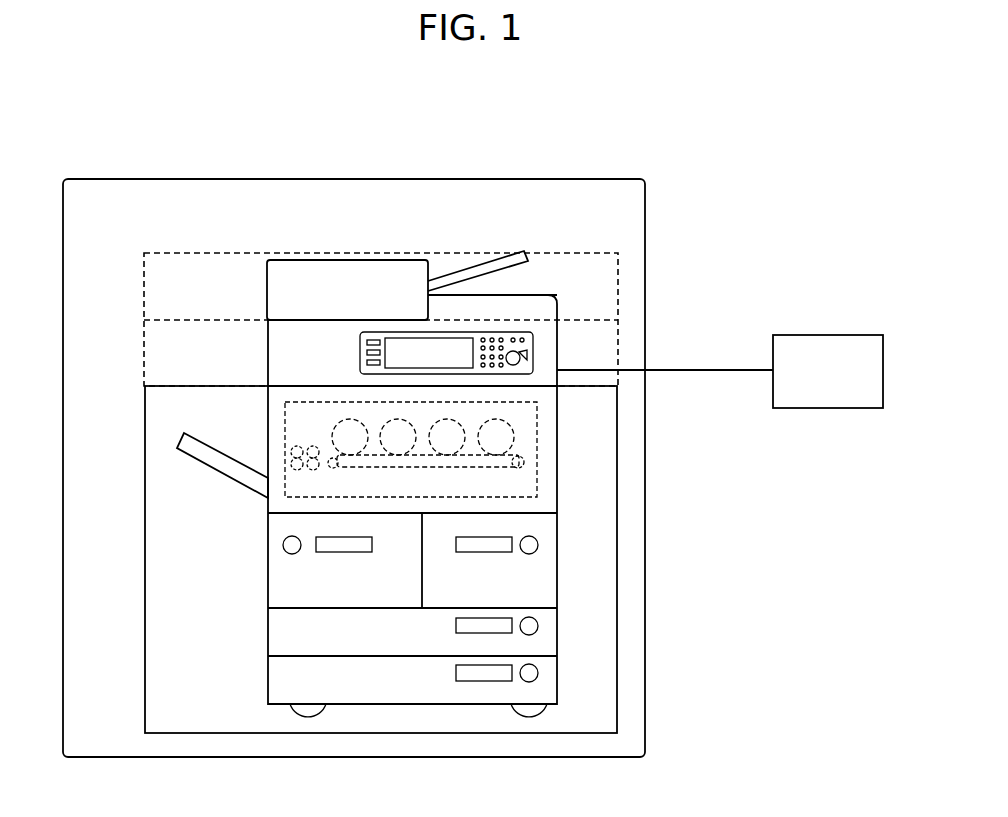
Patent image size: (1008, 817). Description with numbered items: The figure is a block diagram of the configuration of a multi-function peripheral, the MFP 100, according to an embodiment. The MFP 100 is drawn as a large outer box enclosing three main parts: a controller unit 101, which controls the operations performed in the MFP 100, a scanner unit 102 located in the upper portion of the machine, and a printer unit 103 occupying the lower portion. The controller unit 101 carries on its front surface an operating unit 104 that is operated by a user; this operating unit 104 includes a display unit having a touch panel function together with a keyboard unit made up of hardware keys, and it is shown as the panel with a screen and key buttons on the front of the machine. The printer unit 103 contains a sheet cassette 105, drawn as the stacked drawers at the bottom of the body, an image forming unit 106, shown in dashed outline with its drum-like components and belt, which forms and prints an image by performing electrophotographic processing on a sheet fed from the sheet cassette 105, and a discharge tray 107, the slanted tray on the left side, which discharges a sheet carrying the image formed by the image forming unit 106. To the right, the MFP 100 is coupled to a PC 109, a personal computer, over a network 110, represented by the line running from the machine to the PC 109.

The MFP 100 is at (262, 180).
The controller unit 101 is at (148, 352).
The scanner unit 102 is at (215, 272).
The printer unit 103 is at (148, 432).
The operating unit 104 is at (518, 332).
The sheet cassette 105 is at (533, 576).
The image forming unit 106 is at (538, 468).
The discharge tray 107 is at (230, 468).
The PC 109 is at (818, 335).
The network 110 is at (672, 369).